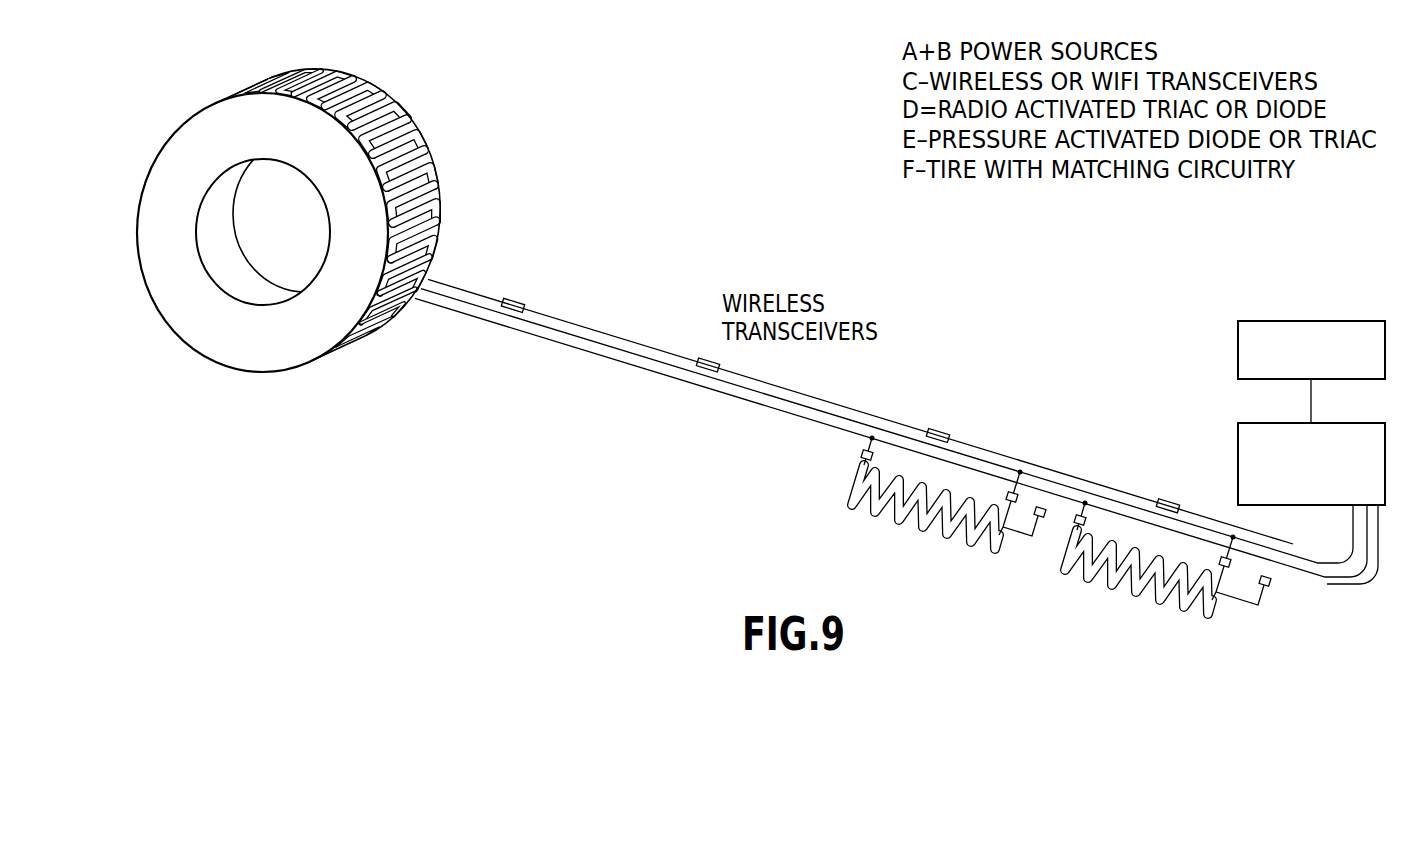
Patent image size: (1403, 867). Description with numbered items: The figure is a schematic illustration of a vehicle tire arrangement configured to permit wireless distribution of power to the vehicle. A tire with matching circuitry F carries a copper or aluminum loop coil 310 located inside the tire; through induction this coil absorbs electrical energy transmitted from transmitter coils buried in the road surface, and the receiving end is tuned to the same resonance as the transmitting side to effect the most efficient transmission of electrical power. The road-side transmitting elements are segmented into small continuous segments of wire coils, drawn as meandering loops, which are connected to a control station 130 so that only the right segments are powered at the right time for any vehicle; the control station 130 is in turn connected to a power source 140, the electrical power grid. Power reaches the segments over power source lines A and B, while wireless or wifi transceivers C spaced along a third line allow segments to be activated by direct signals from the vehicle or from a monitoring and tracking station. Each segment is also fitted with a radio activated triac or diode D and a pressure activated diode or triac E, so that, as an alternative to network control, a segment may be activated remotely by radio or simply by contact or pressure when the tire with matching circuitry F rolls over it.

The loop coil 310 is at (403, 140).
The power source 140 is at (1238, 341).
The control station 130 is at (1238, 444).
The power source A is at (896, 445).
The power source B is at (887, 433).
The wireless or wifi transceivers C is at (867, 417).
The radio activated triac or diode D is at (1133, 540).
The pressure activated diode or triac E is at (1162, 552).
The tire with matching circuitry F is at (321, 220).